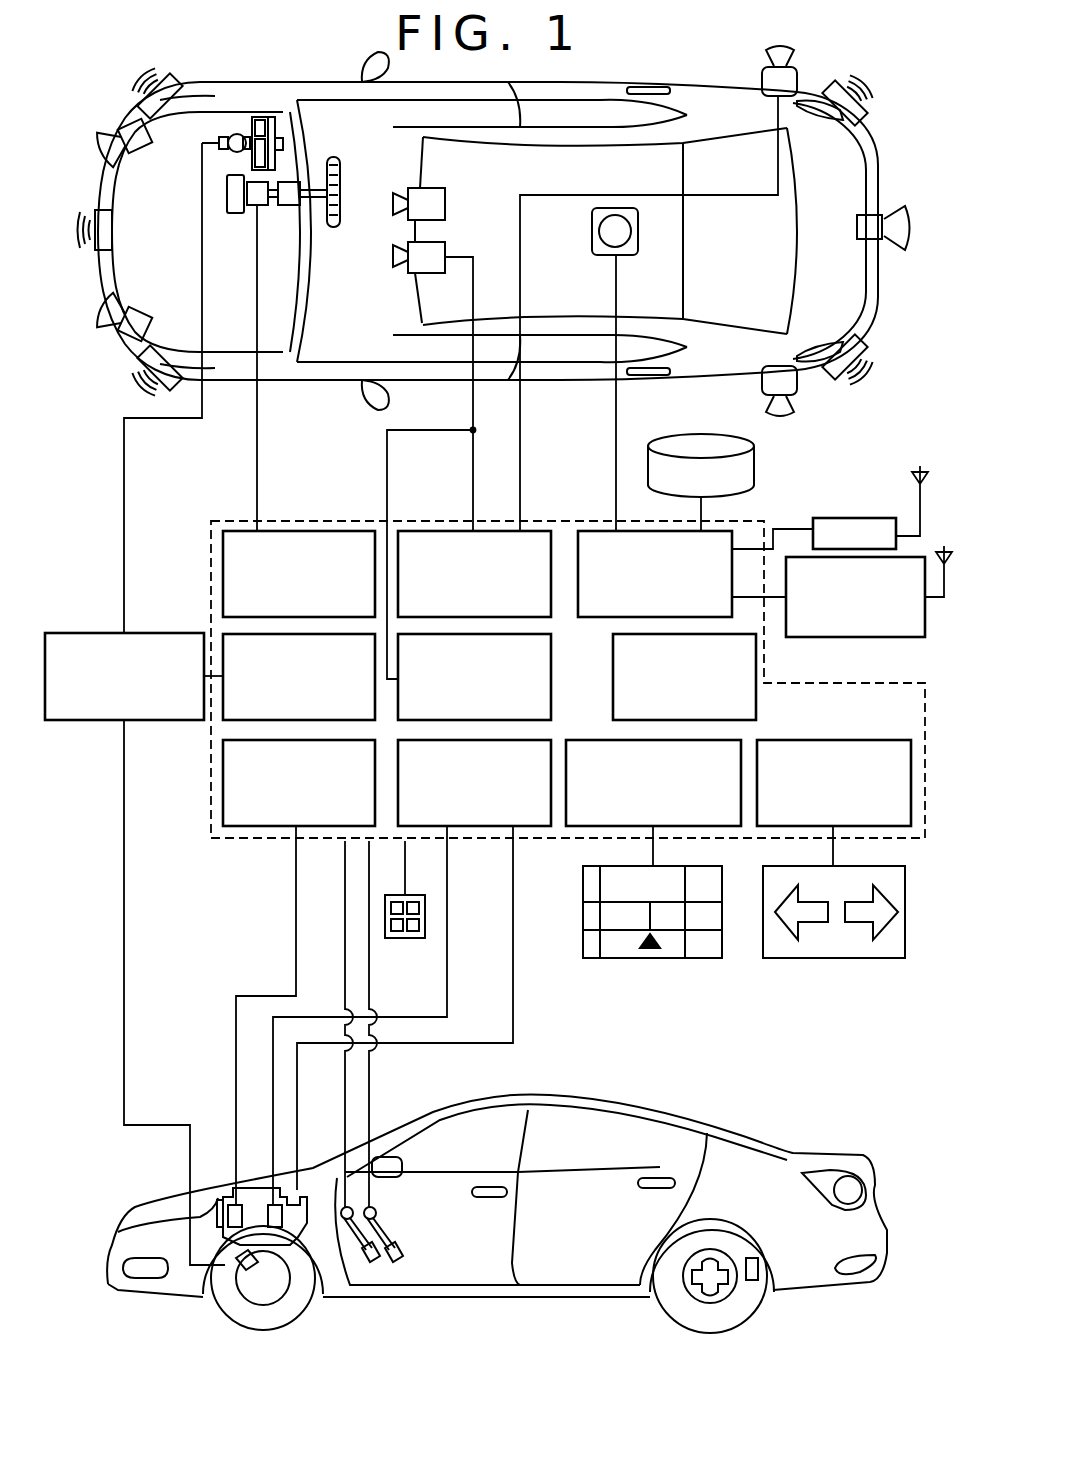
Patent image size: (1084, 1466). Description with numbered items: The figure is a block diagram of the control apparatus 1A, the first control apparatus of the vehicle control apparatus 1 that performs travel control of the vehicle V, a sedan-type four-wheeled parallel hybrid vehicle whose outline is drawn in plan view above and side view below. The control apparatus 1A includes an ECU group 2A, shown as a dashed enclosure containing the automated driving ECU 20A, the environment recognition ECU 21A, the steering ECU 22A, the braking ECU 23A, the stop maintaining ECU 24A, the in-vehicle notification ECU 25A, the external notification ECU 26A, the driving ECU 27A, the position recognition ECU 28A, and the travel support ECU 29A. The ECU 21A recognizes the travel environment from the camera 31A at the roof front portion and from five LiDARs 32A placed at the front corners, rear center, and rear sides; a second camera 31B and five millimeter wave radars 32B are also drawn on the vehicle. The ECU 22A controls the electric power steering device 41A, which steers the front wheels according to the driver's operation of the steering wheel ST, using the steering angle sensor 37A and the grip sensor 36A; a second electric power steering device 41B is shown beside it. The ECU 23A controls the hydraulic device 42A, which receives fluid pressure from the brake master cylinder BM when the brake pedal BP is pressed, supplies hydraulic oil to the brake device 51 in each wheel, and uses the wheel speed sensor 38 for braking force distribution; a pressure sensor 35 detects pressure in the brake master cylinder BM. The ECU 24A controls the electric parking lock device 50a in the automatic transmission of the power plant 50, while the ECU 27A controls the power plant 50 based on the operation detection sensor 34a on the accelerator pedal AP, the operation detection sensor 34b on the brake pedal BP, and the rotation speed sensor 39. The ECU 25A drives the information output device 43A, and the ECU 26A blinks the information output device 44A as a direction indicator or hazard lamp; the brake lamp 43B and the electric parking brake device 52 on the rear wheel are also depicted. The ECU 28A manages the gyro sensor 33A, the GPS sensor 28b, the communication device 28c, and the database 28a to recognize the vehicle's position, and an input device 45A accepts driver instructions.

The vehicle control apparatus 1 is at (890, 381).
The control apparatus 1A is at (874, 471).
The ECU group 2A is at (345, 521).
The vehicle V is at (895, 136).
The automated driving ECU 20A is at (764, 683).
The environment recognition ECU 21A is at (538, 531).
The steering ECU 22A is at (268, 531).
The braking ECU 23A is at (225, 722).
The stop maintaining ECU 24A is at (260, 828).
The information ECU 25A is at (580, 828).
The light ECU 26A is at (868, 740).
The driving ECU 27A is at (486, 828).
The position recognition ECU 28A is at (732, 531).
The database 28a is at (690, 436).
The GPS sensor 28b is at (848, 518).
The communication device 28c is at (870, 637).
The travel support ECU 29A is at (551, 676).
The camera 31A is at (410, 274).
The camera 31B is at (447, 198).
The LiDAR 32A is at (145, 152).
The millimeter wave radar 32B is at (205, 60).
The gyro sensor 33A is at (600, 255).
The operation detection sensor 34a is at (345, 1206).
The operation detection sensor 34b is at (378, 1212).
The pressure sensor 35 is at (262, 117).
The grip sensor 36A is at (343, 181).
The steering angle sensor 37A is at (235, 213).
The wheel speed sensor 38 is at (753, 1282).
The rotation speed sensor 39 is at (265, 1205).
The electric power steering device 41A is at (262, 206).
The electric power steering device 41B is at (273, 116).
The hydraulic device 42A is at (96, 633).
The information output device 43A is at (680, 958).
The information output device 43B is at (845, 1176).
The information output device 44A is at (843, 958).
The input device 45A is at (407, 940).
The power plant 50 is at (300, 1290).
The electric parking lock device 50a is at (220, 1195).
The brake device 51 is at (237, 1290).
The electric parking brake device 52 is at (698, 1300).
The accelerator pedal AP is at (375, 1265).
The brake pedal BP is at (400, 1262).
The brake master cylinder BM is at (240, 134).
The steering wheel ST is at (340, 160).